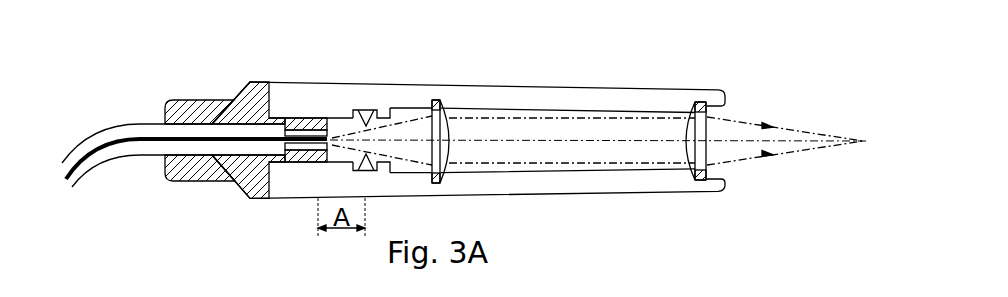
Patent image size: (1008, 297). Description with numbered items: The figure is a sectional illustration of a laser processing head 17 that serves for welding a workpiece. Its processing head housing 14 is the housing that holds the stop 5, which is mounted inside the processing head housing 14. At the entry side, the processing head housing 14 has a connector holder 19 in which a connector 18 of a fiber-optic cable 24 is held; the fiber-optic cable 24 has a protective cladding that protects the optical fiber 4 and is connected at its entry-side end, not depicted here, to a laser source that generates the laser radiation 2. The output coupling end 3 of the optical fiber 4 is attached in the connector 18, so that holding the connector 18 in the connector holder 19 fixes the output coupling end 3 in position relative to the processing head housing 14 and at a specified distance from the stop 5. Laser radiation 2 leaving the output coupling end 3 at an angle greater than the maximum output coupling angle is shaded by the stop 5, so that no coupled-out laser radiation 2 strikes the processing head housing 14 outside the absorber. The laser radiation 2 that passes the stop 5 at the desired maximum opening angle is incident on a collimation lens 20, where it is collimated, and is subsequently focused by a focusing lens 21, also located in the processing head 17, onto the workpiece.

The laser radiation 2 is at (753, 156).
The output coupling end 3 is at (317, 122).
The optical fiber 4 is at (214, 122).
The stop 5 is at (358, 112).
The processing head housing 14 is at (413, 100).
The processing head 17 is at (742, 101).
The connector 18 is at (193, 100).
The connector holder 19 is at (303, 116).
The collimation lens 20 is at (452, 120).
The focusing lens 21 is at (700, 101).
The fiber-optic cable 24 is at (102, 128).